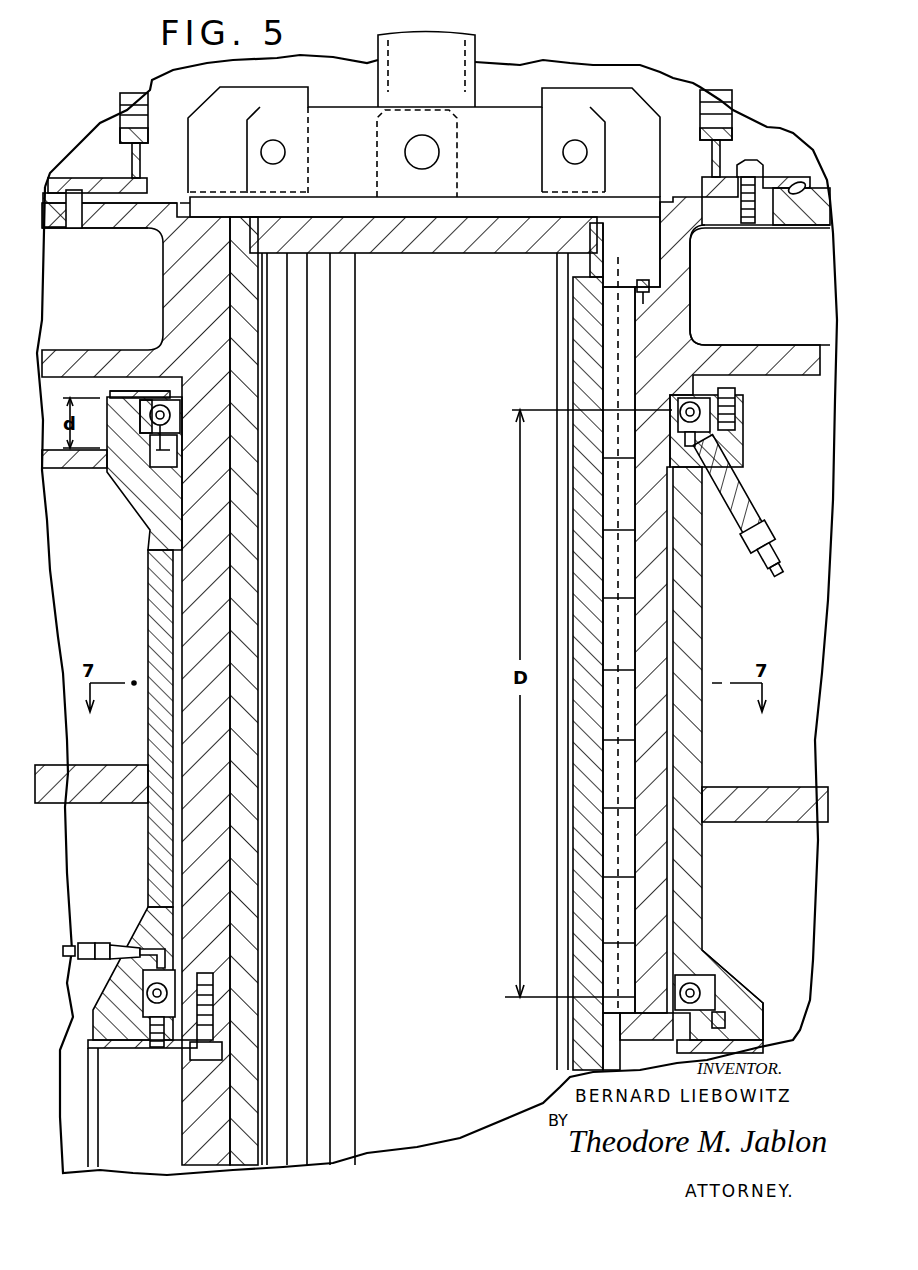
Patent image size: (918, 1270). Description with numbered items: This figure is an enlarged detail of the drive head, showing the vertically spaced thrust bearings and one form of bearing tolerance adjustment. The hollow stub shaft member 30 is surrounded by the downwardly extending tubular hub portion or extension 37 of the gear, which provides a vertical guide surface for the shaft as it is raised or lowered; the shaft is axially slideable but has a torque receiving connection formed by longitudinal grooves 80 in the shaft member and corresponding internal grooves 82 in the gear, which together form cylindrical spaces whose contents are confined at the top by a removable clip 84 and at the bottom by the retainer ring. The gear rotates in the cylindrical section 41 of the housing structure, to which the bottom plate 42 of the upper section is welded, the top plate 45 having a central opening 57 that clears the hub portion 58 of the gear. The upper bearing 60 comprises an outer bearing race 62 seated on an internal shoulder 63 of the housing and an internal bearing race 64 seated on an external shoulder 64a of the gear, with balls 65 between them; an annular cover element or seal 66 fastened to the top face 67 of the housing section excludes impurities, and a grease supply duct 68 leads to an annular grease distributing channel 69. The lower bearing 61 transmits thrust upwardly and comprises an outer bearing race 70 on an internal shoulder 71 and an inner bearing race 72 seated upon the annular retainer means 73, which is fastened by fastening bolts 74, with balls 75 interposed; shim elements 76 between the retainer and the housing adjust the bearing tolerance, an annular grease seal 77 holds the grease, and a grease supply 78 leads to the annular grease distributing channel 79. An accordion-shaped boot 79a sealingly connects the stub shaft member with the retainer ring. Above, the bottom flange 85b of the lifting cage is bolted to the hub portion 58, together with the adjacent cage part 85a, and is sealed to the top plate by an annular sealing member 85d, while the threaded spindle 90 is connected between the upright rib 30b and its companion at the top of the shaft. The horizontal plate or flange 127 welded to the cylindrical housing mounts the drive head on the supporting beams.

The hollow stub shaft member 30 is at (237, 550).
The upright plate or rib 30b is at (507, 118).
The tubular hub portion or extension 37 is at (190, 590).
The cylindrical section 41 is at (700, 622).
The bottom plate 42 is at (70, 470).
The top plate 45 is at (803, 215).
The central opening 57 is at (92, 215).
The hub portion 58 is at (126, 212).
The upper bearing 60 is at (720, 407).
The lower bearing 61 is at (180, 968).
The outer bearing race 62 is at (150, 400).
The internal shoulder 63 is at (112, 470).
The internal bearing race 64 is at (182, 422).
The external shoulder 64a is at (190, 392).
The anti-friction elements or balls 65 is at (166, 455).
The annular cover element or seal 66 is at (120, 391).
The top face 67 is at (115, 393).
The grease supply duct 68 is at (725, 490).
The annular grease distributing channel 69 is at (700, 437).
The outer bearing race 70 is at (708, 995).
The internal shoulder 71 is at (705, 975).
The inner bearing race 72 is at (675, 995).
The annular retainer means 73 is at (680, 1042).
The fastening bolts 74 is at (203, 1062).
The anti-friction elements or balls 75 is at (705, 993).
The shim elements 76 is at (650, 1040).
The annular grease seal 77 is at (720, 1020).
The grease supply 78 is at (114, 944).
The annular grease distributing channel 79 is at (150, 965).
The accordion-shaped boot 79a is at (98, 1125).
The longitudinal grooves 80 is at (612, 280).
The grooves 82 is at (637, 348).
The removable clip 84 is at (650, 283).
The plate 85a is at (706, 185).
The bottom flange 85b is at (775, 178).
The annular sealing member 85d is at (812, 178).
The threaded spindle 90 is at (476, 48).
The horizontal plate or flange 127 is at (774, 800).